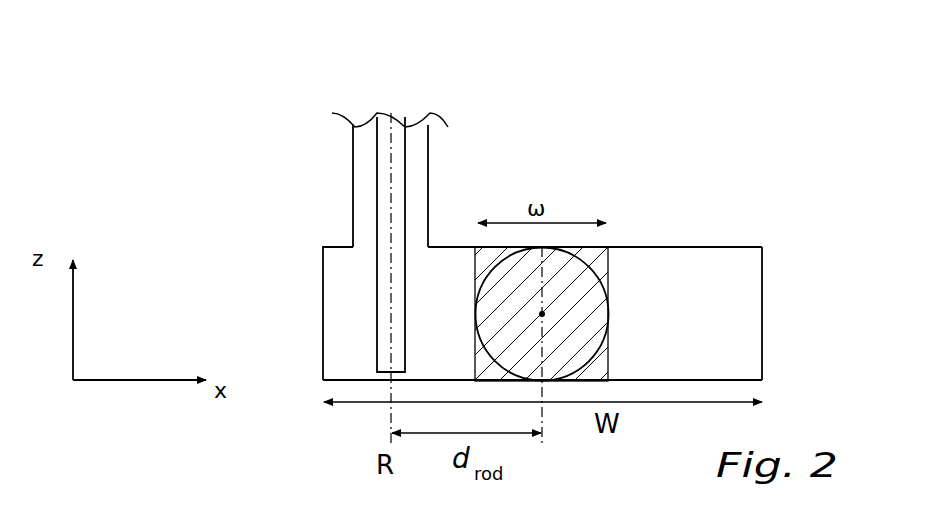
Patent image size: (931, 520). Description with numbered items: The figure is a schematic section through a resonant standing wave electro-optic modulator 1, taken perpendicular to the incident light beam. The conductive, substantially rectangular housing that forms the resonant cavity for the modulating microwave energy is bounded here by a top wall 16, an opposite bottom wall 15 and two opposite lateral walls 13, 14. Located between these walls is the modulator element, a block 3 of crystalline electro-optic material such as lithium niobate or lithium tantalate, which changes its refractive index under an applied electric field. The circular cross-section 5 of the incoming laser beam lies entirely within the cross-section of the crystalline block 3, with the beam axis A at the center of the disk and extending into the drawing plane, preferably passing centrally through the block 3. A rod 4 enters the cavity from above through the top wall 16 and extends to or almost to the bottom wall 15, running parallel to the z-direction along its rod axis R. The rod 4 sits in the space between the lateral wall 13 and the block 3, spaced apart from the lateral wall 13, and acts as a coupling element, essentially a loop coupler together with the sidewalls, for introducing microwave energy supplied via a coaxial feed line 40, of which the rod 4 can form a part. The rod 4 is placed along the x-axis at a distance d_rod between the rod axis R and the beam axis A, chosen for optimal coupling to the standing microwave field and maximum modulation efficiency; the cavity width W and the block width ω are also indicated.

The electro-optic modulator 1 is at (238, 116).
The block of crystalline material 3 is at (594, 258).
The rod 4 is at (383, 150).
The cross-section of the laser beam 5 is at (580, 290).
The lateral wall 13 is at (323, 280).
The lateral wall 14 is at (762, 295).
The bottom wall 15 is at (747, 381).
The top wall 16 is at (702, 247).
The coaxial feed line 40 is at (438, 156).